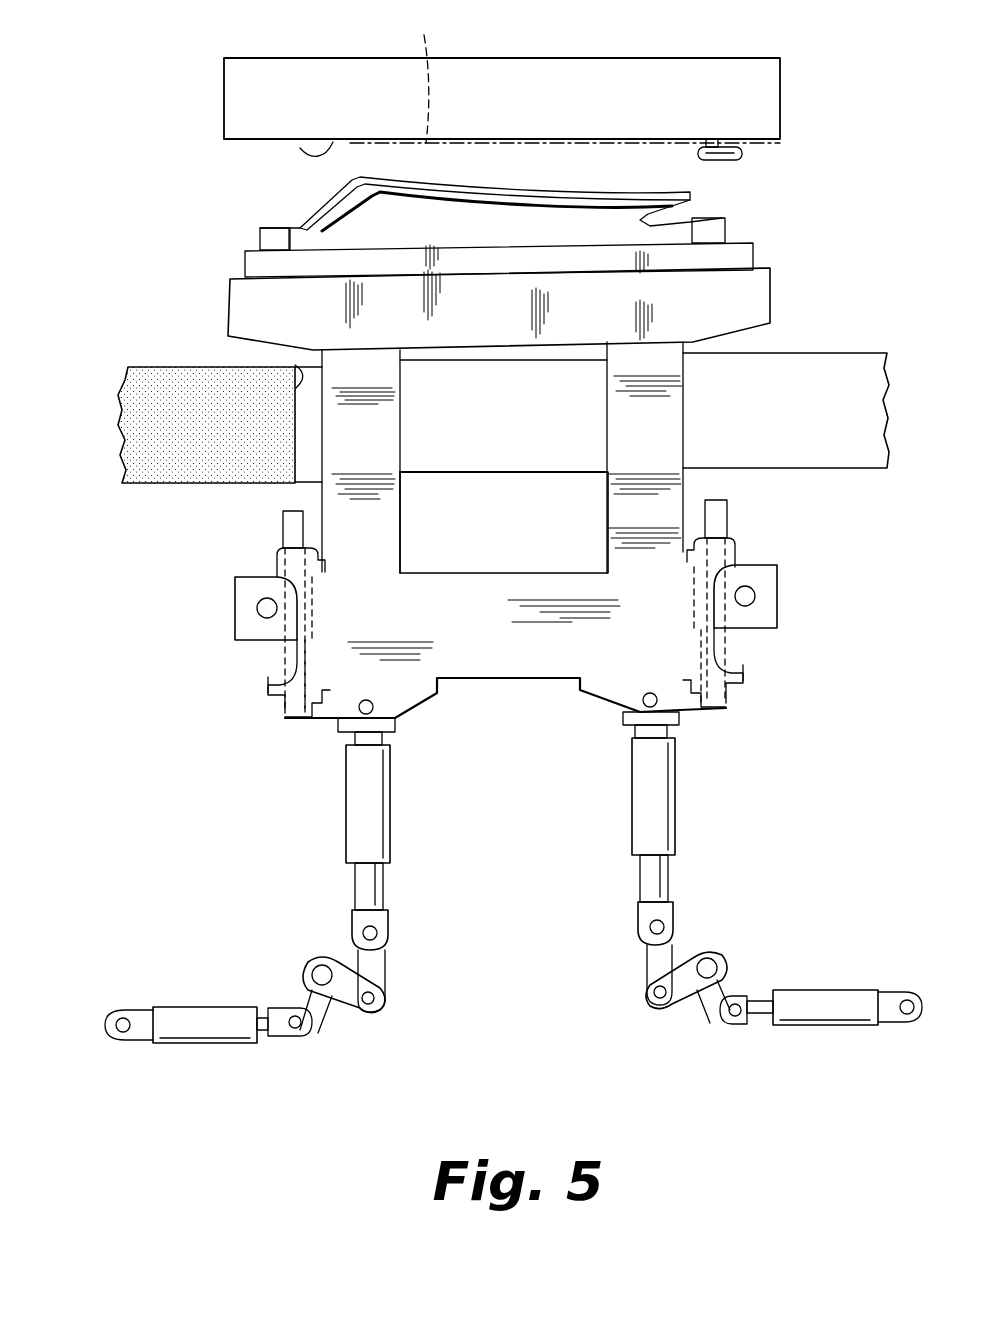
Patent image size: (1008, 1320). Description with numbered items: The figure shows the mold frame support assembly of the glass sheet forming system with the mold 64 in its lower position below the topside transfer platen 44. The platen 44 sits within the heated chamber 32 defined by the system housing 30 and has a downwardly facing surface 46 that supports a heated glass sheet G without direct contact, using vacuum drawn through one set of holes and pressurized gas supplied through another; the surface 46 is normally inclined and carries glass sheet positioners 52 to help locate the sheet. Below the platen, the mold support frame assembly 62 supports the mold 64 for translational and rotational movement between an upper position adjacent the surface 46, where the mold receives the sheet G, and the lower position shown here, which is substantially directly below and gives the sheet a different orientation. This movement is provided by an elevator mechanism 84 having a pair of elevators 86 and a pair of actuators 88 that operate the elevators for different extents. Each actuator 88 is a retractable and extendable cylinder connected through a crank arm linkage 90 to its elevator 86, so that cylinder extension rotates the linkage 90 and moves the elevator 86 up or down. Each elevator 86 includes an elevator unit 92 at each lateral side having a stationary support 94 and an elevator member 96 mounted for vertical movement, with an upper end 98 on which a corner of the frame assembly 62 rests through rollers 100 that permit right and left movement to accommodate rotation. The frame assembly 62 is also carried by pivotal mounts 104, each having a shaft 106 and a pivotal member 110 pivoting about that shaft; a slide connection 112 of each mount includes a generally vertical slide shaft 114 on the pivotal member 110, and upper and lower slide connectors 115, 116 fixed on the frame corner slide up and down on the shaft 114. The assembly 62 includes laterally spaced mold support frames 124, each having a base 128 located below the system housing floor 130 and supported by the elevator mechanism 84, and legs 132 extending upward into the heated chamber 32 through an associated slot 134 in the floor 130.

The system housing 30 is at (120, 437).
The heated chamber 32 is at (165, 365).
The topside transfer platen 44 is at (218, 102).
The downwardly facing surface 46 is at (300, 148).
The heated glass sheet G is at (424, 35).
The glass sheet positioners 52 is at (750, 168).
The mold support frame assembly 62 is at (226, 282).
The mold 64 is at (326, 209).
The elevator mechanism 84 is at (714, 905).
The elevators 86 is at (519, 875).
The actuators 88 is at (205, 1045).
The crank arm linkages 90 is at (348, 1025).
The elevator unit 92 is at (392, 835).
The stationary support 94 is at (352, 777).
The elevator member 96 is at (375, 897).
The upper end 98 is at (395, 722).
The rollers 100 is at (277, 713).
The pivotal mount 104 is at (245, 571).
The shaft 106 is at (267, 608).
The pivotal member 110 is at (243, 592).
The slide connection 112 is at (265, 551).
The slide shaft 114 is at (288, 527).
The upper slide connector 115 is at (335, 548).
The lower slide connector 116 is at (268, 692).
The mold support frame 124 is at (664, 444).
The base 128 is at (520, 660).
The system housing floor 130 is at (148, 450).
The legs 132 is at (622, 447).
The slot 134 is at (302, 373).